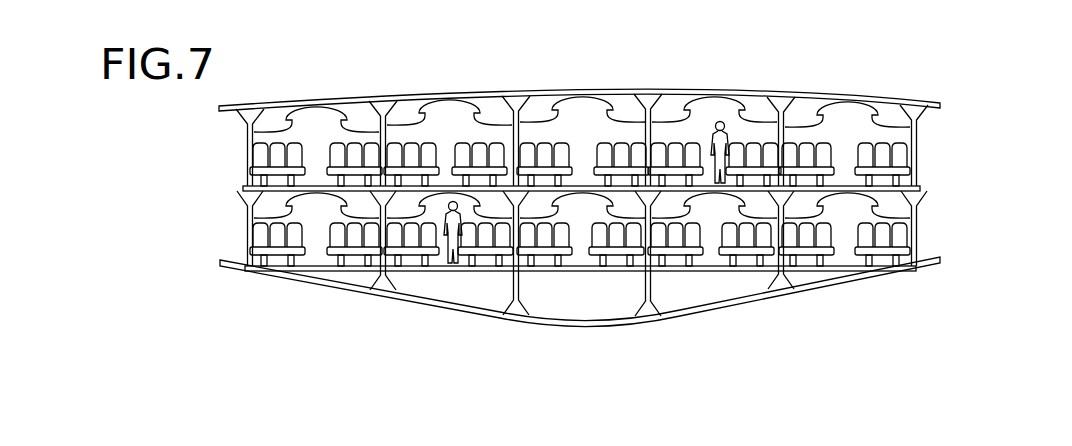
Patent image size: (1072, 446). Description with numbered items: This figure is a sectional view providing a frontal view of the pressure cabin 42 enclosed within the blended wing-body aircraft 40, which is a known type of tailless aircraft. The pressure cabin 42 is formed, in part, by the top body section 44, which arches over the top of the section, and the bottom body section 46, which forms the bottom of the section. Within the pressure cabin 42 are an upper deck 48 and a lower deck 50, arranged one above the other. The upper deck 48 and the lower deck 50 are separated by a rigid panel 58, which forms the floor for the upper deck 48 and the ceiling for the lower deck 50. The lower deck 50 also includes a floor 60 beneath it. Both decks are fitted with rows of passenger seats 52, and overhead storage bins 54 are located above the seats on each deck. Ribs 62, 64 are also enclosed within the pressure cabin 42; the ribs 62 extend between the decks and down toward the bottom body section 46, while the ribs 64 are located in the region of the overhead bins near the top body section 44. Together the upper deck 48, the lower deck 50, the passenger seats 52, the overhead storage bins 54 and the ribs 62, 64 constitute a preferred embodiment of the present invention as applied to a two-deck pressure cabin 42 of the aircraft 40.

The blended wing-body aircraft 40 is at (963, 60).
The pressure cabin 42 is at (985, 148).
The top body section 44 is at (667, 89).
The bottom body section 46 is at (451, 312).
The upper deck 48 is at (222, 150).
The lower deck 50 is at (222, 233).
The passenger seats 52 is at (912, 236).
The overhead storage bins 54 is at (358, 113).
The rigid panel 58 is at (245, 189).
The floor 60 is at (823, 271).
The rib 62 is at (551, 302).
The rib 64 is at (438, 125).